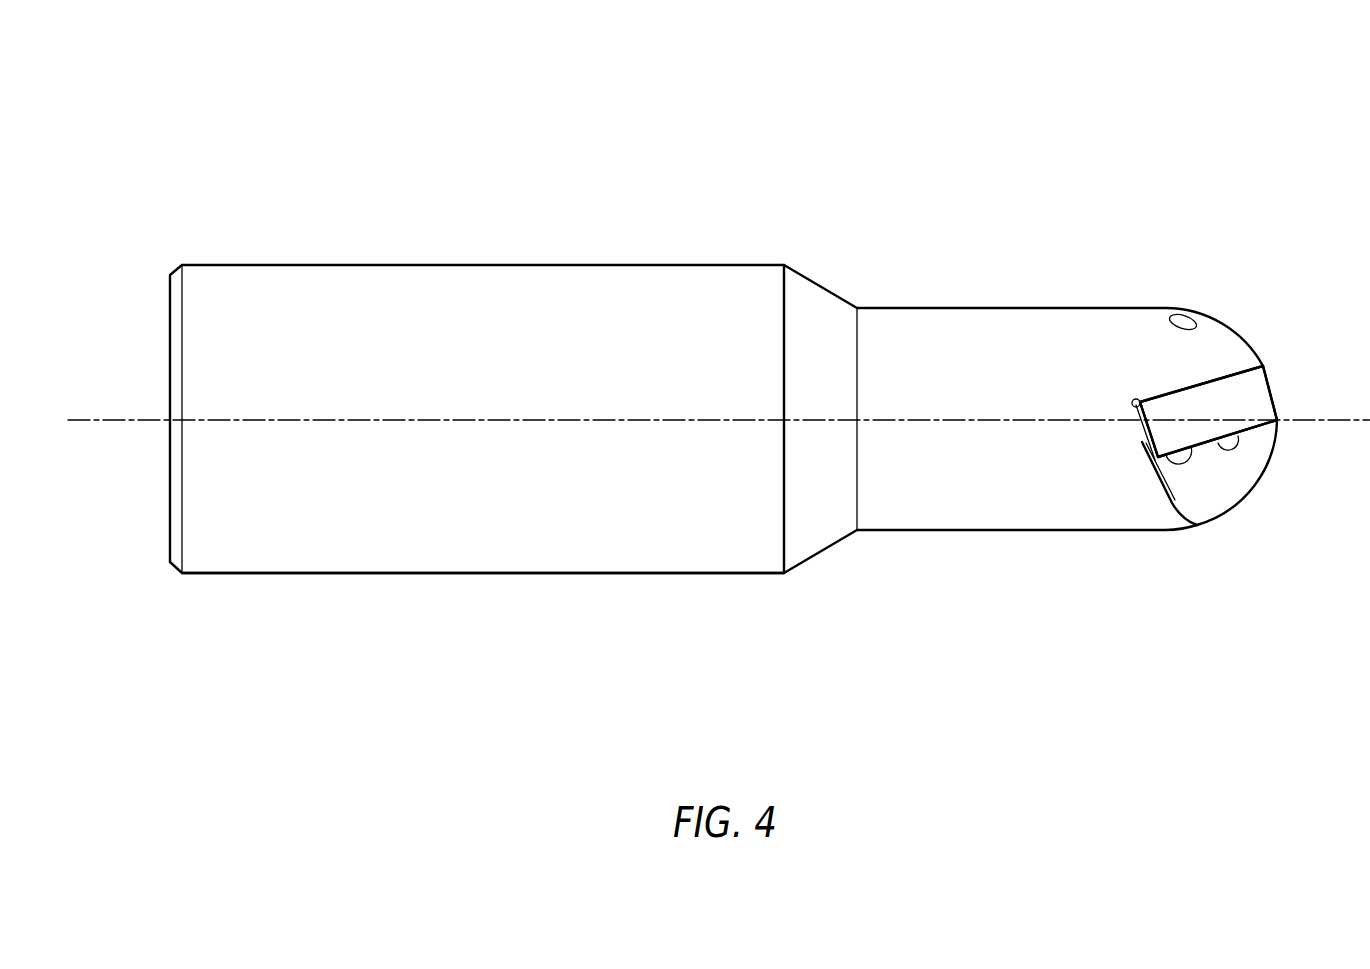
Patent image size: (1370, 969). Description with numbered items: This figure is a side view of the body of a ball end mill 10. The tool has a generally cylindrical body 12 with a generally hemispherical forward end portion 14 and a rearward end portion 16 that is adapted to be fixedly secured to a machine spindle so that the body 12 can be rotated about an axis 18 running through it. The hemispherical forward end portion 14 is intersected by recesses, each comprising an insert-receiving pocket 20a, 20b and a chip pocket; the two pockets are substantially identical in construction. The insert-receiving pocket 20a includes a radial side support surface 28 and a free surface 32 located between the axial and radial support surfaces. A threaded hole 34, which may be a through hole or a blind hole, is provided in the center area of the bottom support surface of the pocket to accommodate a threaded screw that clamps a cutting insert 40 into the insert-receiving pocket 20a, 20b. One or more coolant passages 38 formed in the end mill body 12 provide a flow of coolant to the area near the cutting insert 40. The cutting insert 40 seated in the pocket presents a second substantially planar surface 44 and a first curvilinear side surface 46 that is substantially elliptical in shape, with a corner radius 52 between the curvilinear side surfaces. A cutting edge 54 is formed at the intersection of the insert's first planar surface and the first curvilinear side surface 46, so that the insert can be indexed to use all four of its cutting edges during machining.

The ball end mill 10 is at (197, 115).
The body 12 is at (270, 573).
The forward end portion 14 is at (1054, 557).
The rearward end portion 16 is at (317, 637).
The axis 18 is at (380, 420).
The insert-receiving pocket 20a is at (1259, 438).
The insert-receiving pocket 20b is at (1245, 463).
The radial side support surface 28 is at (1207, 490).
The free surface 32 is at (1178, 498).
The threaded hole 34 is at (1173, 320).
The coolant passage 38 is at (1183, 460).
The cutting insert 40 is at (1200, 293).
The second substantially planar surface 44 is at (1218, 378).
The first curvilinear side surface 46 is at (1198, 408).
The corner radius 52 is at (1278, 405).
The cutting edge 54 is at (1237, 433).